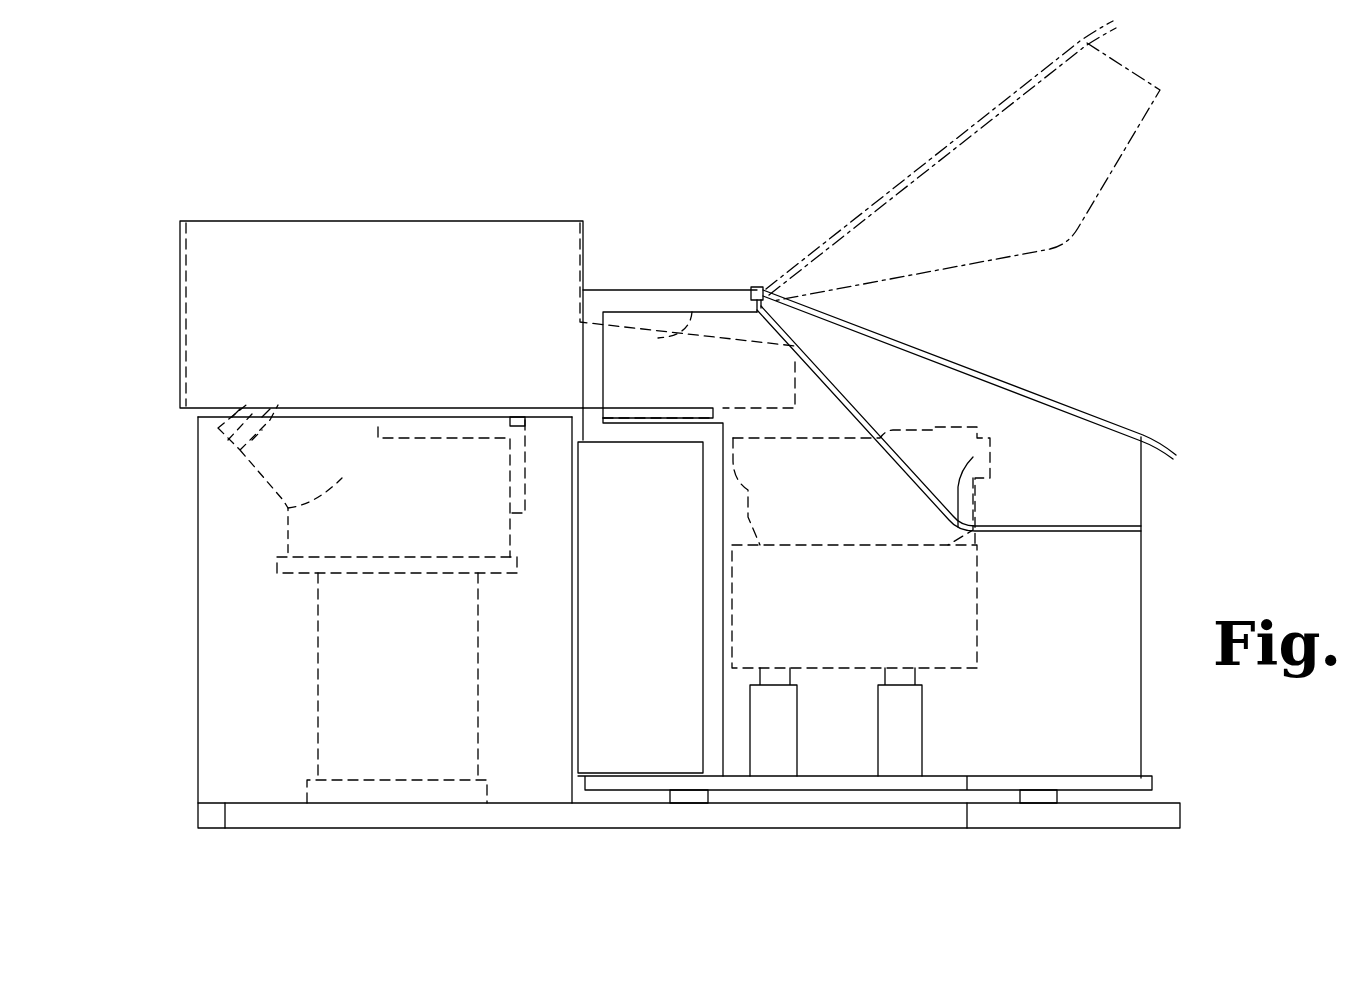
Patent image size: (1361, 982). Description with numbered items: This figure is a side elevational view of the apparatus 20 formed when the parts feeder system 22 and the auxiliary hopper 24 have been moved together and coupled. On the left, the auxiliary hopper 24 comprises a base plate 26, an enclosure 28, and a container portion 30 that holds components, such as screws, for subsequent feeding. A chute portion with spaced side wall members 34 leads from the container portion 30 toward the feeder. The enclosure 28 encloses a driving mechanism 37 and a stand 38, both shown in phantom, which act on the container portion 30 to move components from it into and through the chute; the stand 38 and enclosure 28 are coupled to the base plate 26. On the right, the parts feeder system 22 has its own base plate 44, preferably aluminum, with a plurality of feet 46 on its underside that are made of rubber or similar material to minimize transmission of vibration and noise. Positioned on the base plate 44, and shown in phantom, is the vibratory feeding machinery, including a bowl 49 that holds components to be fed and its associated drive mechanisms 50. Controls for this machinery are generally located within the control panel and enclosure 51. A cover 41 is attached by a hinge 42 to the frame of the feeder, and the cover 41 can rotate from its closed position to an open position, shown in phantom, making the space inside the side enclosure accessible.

The apparatus 20 is at (616, 112).
The parts feeder system 22 is at (1195, 504).
The auxiliary hopper 24 is at (334, 604).
The base plate 26 is at (320, 813).
The enclosure 28 is at (198, 611).
The container portion 30 is at (360, 319).
The side wall members 34 is at (692, 312).
The driving mechanism 37 is at (350, 661).
The stand 38 is at (285, 517).
The cover 41 is at (1120, 151).
The hinge 42 is at (754, 287).
The base plate 44 is at (1150, 782).
The feet 46 is at (697, 794).
The bowl 49 is at (860, 411).
The drive mechanisms 50 is at (835, 620).
The control panel and enclosure 51 is at (626, 599).